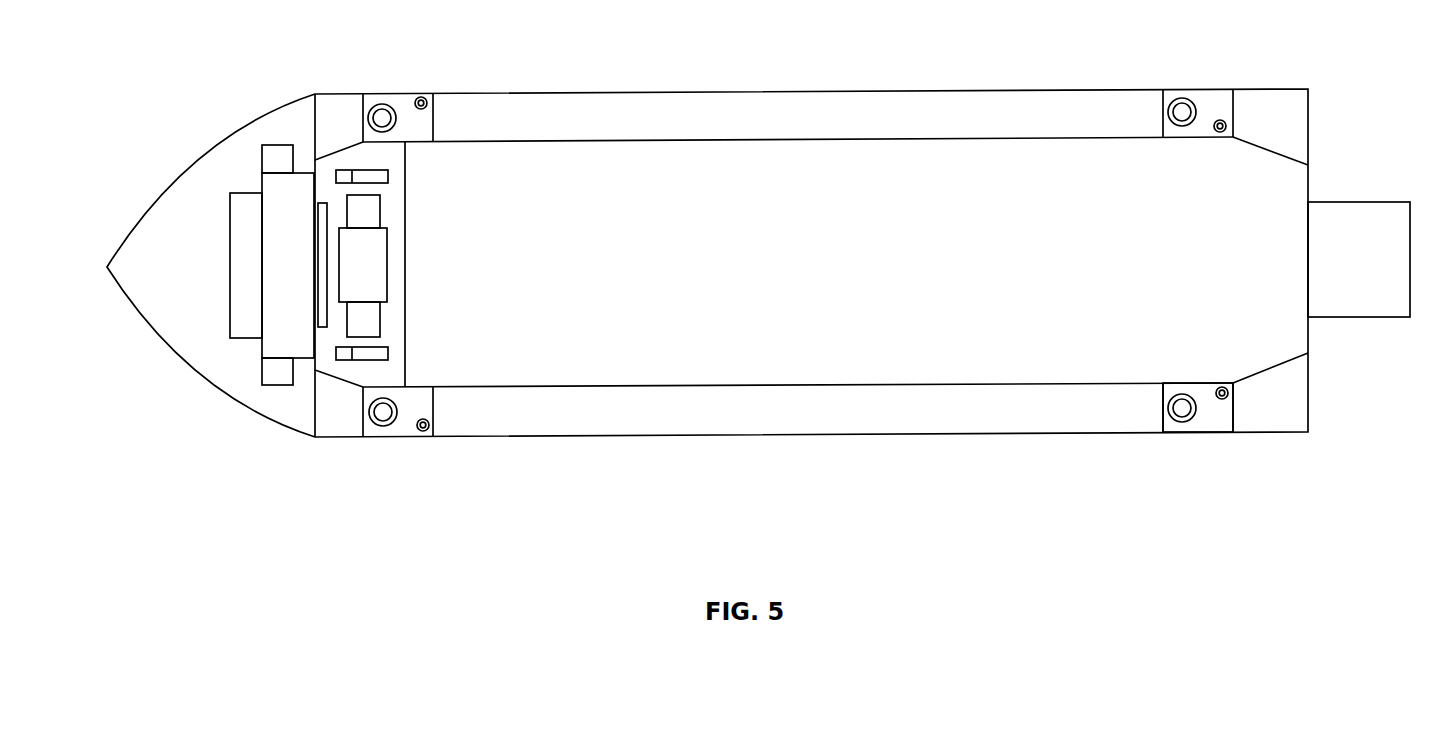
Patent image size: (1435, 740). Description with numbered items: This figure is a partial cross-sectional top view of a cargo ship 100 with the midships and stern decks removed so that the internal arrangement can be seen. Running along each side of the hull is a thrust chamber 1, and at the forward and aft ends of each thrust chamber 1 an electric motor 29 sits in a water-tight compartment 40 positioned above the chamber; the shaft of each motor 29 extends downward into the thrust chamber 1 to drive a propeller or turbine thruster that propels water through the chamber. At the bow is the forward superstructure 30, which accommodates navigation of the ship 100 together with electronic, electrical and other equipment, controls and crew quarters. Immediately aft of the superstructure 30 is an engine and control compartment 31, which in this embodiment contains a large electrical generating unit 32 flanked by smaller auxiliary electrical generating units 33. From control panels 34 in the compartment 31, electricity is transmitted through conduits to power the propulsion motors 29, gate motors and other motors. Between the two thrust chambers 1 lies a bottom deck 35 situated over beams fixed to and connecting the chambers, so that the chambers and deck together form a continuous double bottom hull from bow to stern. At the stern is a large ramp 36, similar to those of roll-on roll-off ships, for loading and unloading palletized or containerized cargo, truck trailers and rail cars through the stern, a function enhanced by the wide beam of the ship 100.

The thrust chamber 1 is at (783, 120).
The electric motor 29 is at (388, 102).
The forward superstructure 30 is at (272, 265).
The engine and control compartment 31 is at (408, 227).
The large electrical generating unit 32 is at (370, 272).
The auxiliary electrical generating unit 33 is at (390, 177).
The control panel 34 is at (435, 95).
The bottom deck 35 is at (835, 262).
The stern ramp 36 is at (1395, 200).
The water-tight compartment 40 is at (1215, 418).
The ship 100 is at (864, 435).